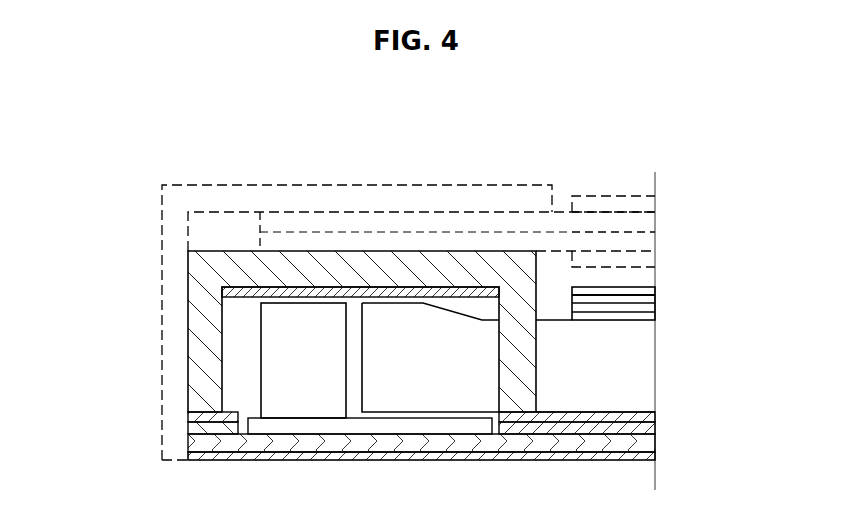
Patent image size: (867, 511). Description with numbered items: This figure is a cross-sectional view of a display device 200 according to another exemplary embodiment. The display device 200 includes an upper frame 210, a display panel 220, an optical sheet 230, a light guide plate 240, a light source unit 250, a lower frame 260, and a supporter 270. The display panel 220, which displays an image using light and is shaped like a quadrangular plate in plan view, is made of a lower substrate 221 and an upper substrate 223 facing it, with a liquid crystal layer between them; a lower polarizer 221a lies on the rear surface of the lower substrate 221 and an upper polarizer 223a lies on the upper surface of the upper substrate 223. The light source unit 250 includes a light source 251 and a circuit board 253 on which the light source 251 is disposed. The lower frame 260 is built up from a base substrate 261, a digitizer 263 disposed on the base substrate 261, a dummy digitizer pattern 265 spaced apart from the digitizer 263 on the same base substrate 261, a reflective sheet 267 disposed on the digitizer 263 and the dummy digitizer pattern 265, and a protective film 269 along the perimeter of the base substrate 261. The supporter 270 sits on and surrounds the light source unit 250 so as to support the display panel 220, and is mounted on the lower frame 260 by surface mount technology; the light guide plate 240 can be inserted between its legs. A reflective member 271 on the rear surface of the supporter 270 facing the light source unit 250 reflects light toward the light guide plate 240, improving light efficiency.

The display device 200 is at (211, 133).
The upper frame 210 is at (176, 271).
The display panel 220 is at (737, 200).
The lower substrate 221 is at (638, 242).
The lower polarizer 221a is at (638, 261).
The upper substrate 223 is at (638, 222).
The upper polarizer 223a is at (638, 203).
The optical sheet 230 is at (643, 292).
The light guide plate 240 is at (638, 363).
The light source unit 250 is at (102, 352).
The light source 251 is at (282, 350).
The circuit board 253 is at (290, 428).
The lower frame 260 is at (730, 405).
The base substrate 261 is at (640, 444).
The digitizer 263 is at (640, 428).
The dummy digitizer pattern 265 is at (200, 430).
The reflective sheet 267 is at (650, 414).
The protective film 269 is at (650, 455).
The supporter 270 is at (333, 262).
The reflective member 271 is at (405, 290).